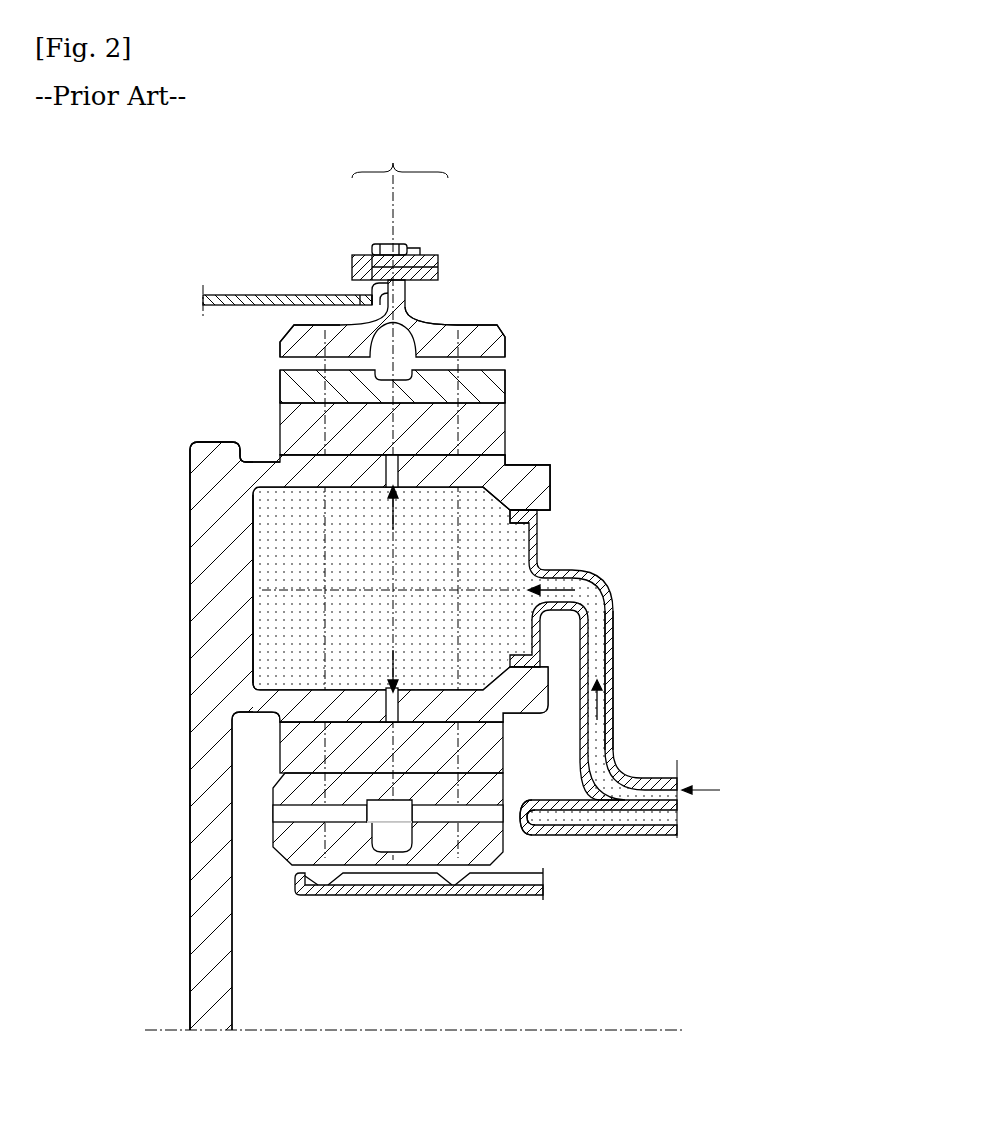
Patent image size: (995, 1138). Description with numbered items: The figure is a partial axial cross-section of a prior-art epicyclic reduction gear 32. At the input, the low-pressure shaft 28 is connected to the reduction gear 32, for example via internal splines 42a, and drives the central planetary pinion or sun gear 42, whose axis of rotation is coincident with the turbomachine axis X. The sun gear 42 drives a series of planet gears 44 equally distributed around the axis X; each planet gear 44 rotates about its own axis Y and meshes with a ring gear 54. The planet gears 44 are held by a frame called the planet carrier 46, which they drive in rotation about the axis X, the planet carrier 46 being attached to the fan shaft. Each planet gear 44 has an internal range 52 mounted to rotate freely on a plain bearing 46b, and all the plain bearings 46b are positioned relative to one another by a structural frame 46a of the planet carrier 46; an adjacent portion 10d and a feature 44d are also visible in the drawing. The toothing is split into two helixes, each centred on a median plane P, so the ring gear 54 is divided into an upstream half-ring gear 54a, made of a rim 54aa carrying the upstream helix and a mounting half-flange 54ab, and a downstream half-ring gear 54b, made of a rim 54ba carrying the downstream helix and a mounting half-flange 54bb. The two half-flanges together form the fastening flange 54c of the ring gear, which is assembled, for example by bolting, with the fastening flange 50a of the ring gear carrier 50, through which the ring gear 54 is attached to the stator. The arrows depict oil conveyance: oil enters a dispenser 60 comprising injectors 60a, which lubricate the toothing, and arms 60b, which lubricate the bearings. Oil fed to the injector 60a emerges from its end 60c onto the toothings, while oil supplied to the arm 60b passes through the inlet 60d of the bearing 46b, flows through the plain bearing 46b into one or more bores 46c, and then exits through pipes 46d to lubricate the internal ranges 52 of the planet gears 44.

The body upper right portion 10d is at (470, 482).
The low-pressure shaft 28 is at (517, 895).
The epicyclic reduction gear 32 is at (667, 373).
The central planetary pinion 42 is at (287, 833).
The internal splines 42a is at (367, 878).
The planet gear 44 is at (283, 798).
The slot 44d is at (282, 814).
The planet carrier 46 is at (555, 462).
The structural frame 46a is at (210, 547).
The plain bearing 46b is at (540, 700).
The bore 46c is at (465, 642).
The pipe 46d is at (380, 707).
The ring gear carrier 50 is at (250, 297).
The fastening flange of the ring gear carrier 50a is at (365, 255).
The internal range 52 is at (508, 420).
The ring gear 54 is at (507, 328).
The upstream half-ring gear 54a is at (277, 345).
The rim 54aa is at (310, 335).
The mounting half-flange 54ab is at (380, 245).
The downstream half-ring gear 54b is at (512, 348).
The rim 54ba is at (450, 342).
The mounting half-flange 54bb is at (405, 253).
The fastening flange of the ring gear 54c is at (395, 170).
The dispenser 60 is at (705, 732).
The injector 60a is at (640, 836).
The arm 60b is at (610, 640).
The end 60c is at (535, 838).
The inlet 60d is at (540, 518).
The median plane P is at (323, 840).
The axis X is at (426, 999).
The axis Y is at (545, 582).